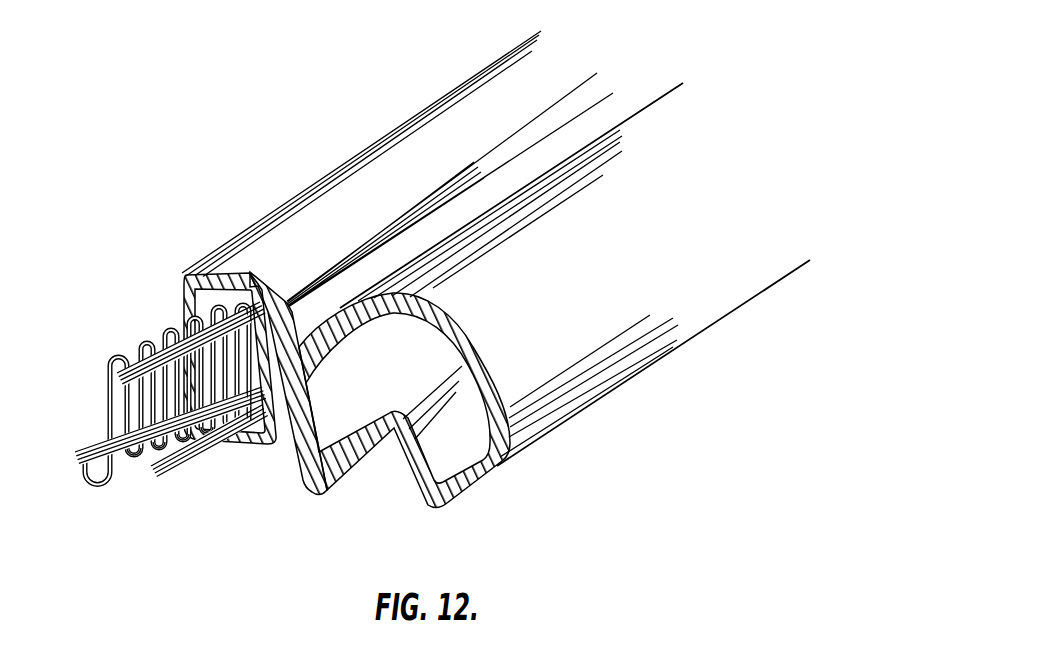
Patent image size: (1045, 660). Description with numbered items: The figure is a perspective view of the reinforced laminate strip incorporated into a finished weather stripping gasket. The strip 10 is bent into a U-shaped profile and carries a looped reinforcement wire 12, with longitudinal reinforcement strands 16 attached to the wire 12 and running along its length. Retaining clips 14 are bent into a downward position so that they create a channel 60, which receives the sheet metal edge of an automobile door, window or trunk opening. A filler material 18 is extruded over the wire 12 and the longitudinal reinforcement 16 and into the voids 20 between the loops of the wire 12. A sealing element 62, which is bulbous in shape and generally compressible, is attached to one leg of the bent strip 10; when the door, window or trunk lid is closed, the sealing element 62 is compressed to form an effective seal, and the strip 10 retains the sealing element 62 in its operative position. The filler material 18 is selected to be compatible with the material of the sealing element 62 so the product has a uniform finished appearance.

The strip 10 is at (252, 210).
The looped reinforcement wire 12 is at (108, 400).
The retaining clips 14 is at (214, 470).
The longitudinal reinforcement strands 16 is at (147, 343).
The filler material 18 is at (368, 192).
The voids 20 is at (128, 452).
The channel 60 is at (148, 462).
The sealing element 62 is at (555, 363).